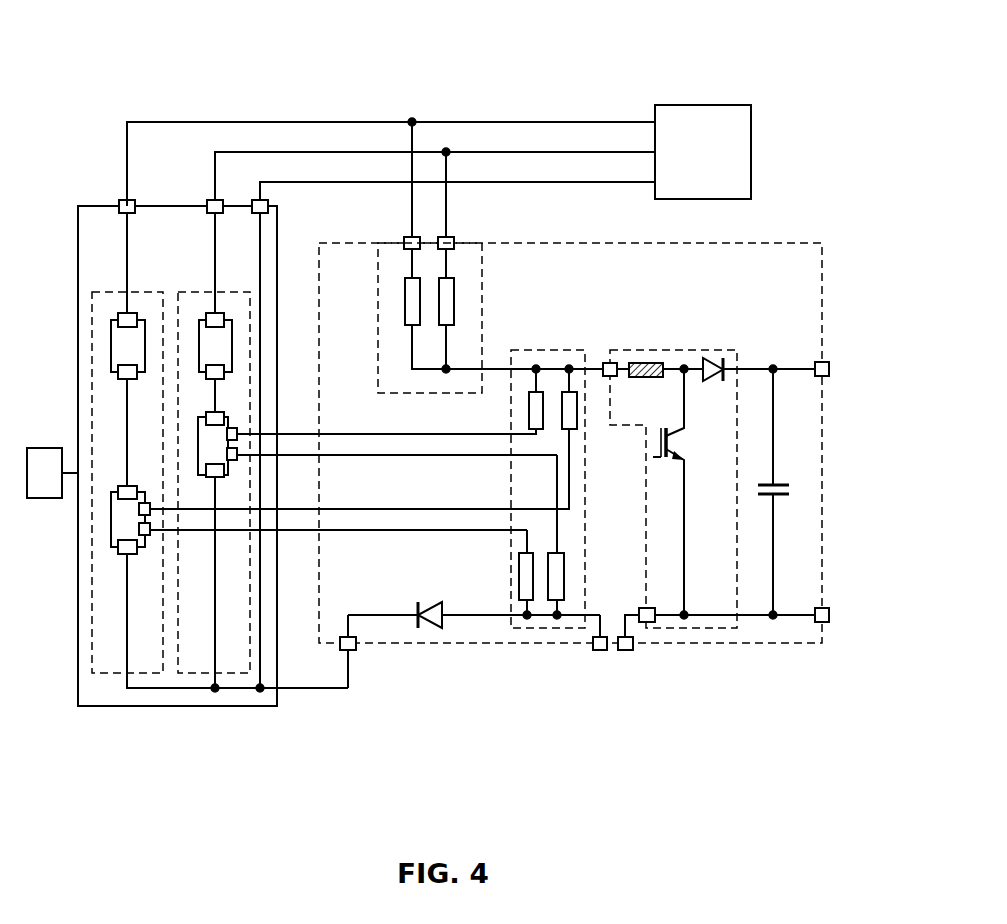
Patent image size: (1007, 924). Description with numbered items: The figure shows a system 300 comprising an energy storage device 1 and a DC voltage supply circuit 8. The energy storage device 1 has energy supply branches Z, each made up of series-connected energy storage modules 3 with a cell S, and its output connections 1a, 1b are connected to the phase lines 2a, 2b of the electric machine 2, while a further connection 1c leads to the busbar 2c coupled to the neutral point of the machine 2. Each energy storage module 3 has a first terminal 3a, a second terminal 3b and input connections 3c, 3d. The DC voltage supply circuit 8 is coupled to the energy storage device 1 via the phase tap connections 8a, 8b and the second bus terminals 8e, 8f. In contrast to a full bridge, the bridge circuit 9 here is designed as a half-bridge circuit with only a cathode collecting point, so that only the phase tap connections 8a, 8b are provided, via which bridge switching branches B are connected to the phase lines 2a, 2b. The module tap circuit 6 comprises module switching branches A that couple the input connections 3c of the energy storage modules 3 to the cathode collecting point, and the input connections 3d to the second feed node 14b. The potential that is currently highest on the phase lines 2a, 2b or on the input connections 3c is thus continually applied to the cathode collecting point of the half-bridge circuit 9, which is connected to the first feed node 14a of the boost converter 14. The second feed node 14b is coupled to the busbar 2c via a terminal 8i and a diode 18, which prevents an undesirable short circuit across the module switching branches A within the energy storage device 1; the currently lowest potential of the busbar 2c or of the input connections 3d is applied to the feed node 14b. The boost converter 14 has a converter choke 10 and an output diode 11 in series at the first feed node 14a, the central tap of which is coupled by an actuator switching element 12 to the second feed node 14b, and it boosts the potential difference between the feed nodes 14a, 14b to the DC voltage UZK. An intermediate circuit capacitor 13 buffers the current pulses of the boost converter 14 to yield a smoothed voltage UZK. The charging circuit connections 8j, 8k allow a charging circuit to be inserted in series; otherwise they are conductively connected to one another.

The system 300 is at (150, 76).
The energy storage device 1 is at (97, 205).
The output connection 1a is at (130, 200).
The output connection 1b is at (211, 200).
The third terminal of battery module 1c is at (258, 214).
The electric machine 2 is at (752, 127).
The phase line 2a is at (228, 121).
The phase line 2b is at (273, 151).
The busbar 2c is at (532, 181).
The energy storage module 3 is at (111, 345).
The first terminal of switching element 3a is at (133, 313).
The second terminal of switching element 3b is at (134, 380).
The input connection 3c is at (150, 502).
The input connection 3d is at (148, 548).
The battery cell / voltage source S is at (45, 447).
The energy supply branch Z is at (140, 675).
The module tap circuit 6 is at (557, 630).
The DC voltage supply circuit 8 is at (791, 242).
The phase tap connection 8a is at (406, 237).
The phase tap connection 8b is at (440, 237).
The second bus terminal 8e is at (820, 361).
The second bus terminal 8f is at (822, 623).
The terminal of charging circuit 8i is at (353, 651).
The charging circuit connection 8j is at (599, 651).
The charging circuit connection 8k is at (627, 651).
The half-bridge circuit 9 is at (378, 357).
The module switching branch A is at (545, 375).
The resistor B is at (404, 300).
The converter choke 10 is at (640, 362).
The output diode 11 is at (708, 357).
The actuator switching element 12 is at (676, 452).
The intermediate circuit capacitor 13 is at (765, 497).
The boost converter 14 is at (716, 630).
The first feed node 14a is at (608, 362).
The second feed node 14b is at (647, 623).
The diode 18 is at (430, 630).
The DC voltage UZK is at (808, 570).